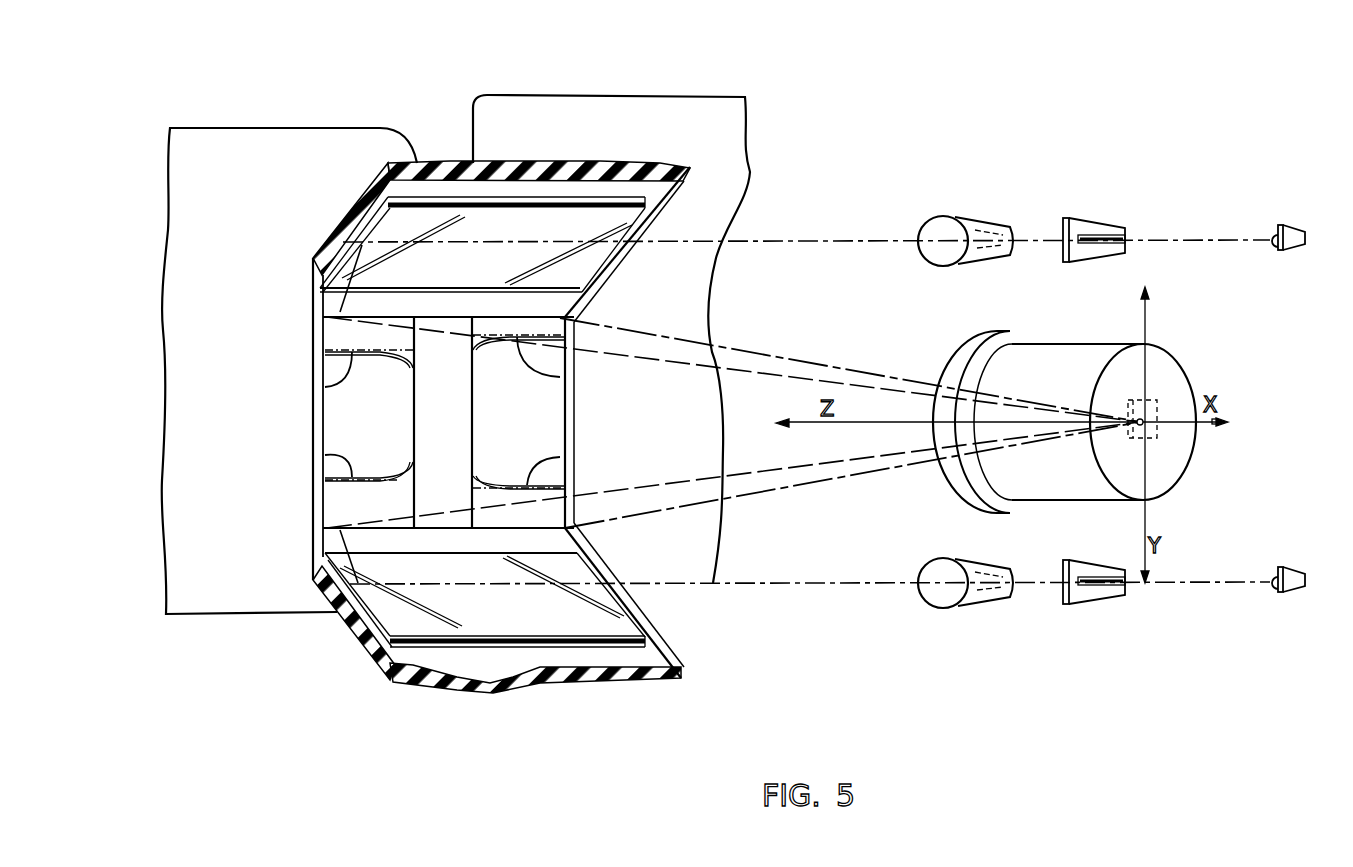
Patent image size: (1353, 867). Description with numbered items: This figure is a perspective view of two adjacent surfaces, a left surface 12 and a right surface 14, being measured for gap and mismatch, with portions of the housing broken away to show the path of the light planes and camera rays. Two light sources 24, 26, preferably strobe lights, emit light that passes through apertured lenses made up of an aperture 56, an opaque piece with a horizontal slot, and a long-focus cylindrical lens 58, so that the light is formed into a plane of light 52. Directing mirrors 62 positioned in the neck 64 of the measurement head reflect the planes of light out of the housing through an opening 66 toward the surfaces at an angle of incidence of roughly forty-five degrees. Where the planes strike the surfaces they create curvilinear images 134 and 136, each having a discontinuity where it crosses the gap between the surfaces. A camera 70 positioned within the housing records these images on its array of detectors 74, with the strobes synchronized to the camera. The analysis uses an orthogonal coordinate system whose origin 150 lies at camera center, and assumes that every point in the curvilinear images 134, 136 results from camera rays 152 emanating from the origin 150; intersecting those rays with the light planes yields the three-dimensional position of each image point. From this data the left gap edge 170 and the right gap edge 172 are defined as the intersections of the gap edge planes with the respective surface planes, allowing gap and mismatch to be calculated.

The left surface 12 is at (247, 281).
The right surface 14 is at (563, 145).
The first light source 24 is at (1272, 235).
The second light source 26 is at (1272, 590).
The first plane of light 52 is at (763, 240).
The aperture 56 is at (1090, 236).
The long-focus cylindrical lens 58 is at (977, 223).
The directing mirrors 62 is at (640, 214).
The neck 64 is at (620, 165).
The opening 66 is at (323, 490).
The camera 70 is at (1068, 350).
The array of detectors 74 is at (1163, 408).
The first curvilinear image 134 is at (352, 352).
The second curvilinear image 136 is at (352, 477).
The origin 150 is at (1163, 425).
The camera rays 152 is at (632, 357).
The left gap edge 170 is at (414, 416).
The right gap edge 172 is at (473, 430).